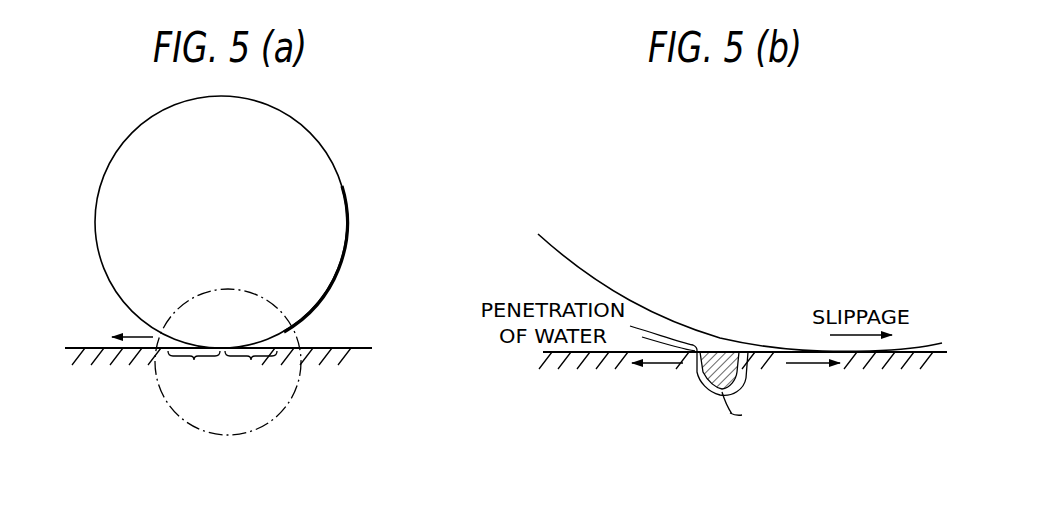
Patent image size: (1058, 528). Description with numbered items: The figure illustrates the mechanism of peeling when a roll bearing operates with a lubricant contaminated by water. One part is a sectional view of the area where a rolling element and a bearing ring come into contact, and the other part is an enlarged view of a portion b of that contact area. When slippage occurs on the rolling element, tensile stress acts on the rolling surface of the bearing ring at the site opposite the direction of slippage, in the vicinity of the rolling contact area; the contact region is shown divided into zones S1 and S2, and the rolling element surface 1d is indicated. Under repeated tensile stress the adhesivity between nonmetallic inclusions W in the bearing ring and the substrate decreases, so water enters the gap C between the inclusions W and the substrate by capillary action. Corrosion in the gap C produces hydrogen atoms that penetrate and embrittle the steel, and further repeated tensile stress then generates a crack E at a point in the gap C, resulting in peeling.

The tread surface 1d is at (347, 183).
The adhesion region S1 is at (194, 369).
The slip region S2 is at (251, 369).
The portion of the contact area b is at (278, 422).
The nonmetallic inclusions W is at (706, 393).
The gap C is at (741, 387).
The crack E is at (731, 418).